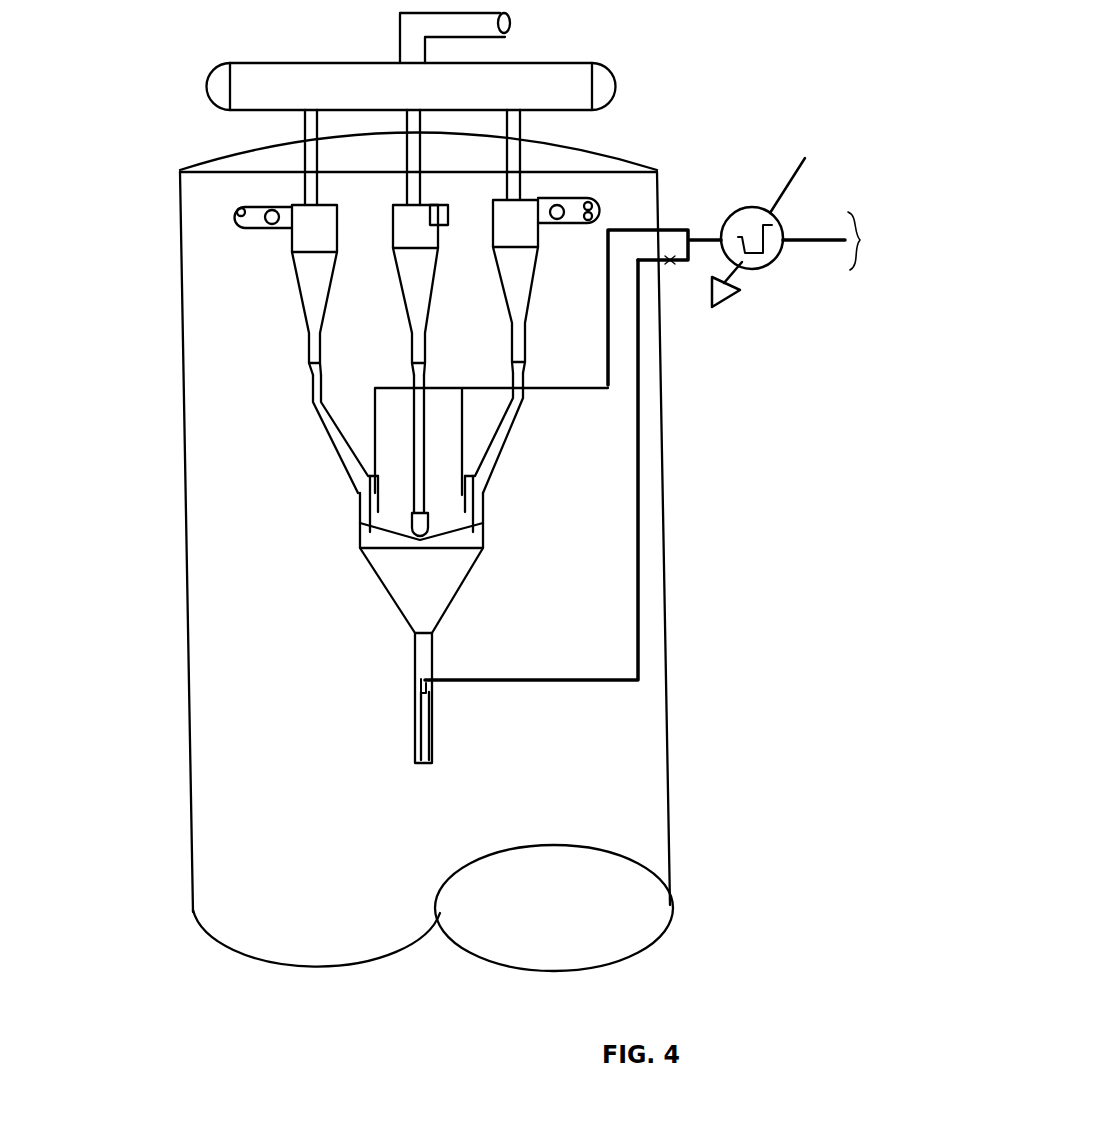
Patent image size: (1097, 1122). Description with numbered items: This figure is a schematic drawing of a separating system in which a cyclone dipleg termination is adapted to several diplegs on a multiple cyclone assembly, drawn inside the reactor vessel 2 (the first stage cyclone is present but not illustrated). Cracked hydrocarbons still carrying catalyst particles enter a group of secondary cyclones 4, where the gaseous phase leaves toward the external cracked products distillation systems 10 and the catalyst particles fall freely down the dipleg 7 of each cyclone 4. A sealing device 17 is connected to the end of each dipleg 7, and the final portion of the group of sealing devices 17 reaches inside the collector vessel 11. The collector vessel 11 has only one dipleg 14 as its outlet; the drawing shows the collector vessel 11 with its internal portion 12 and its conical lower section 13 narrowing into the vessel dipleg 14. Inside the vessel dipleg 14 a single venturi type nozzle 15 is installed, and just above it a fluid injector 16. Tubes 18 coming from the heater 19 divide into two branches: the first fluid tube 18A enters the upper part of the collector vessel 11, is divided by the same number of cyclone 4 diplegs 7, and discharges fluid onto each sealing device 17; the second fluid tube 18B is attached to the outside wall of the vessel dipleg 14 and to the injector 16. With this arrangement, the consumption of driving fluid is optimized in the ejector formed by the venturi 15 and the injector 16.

The reactor vessel 2 is at (183, 347).
The second cyclone 4 is at (515, 288).
The dipleg 7 is at (487, 452).
The external cracked products distillation systems 10 is at (482, 25).
The collector vessel 11 is at (358, 530).
The distributor baffle 12 is at (385, 542).
The conical hopper section 13 is at (427, 583).
The vessel dipleg 14 is at (423, 660).
The venturi type nozzle 15 is at (433, 728).
The fluid injector 16 is at (423, 687).
The sealing device 17 is at (428, 540).
The tubes 18 is at (700, 235).
The first fluid tube 18A is at (672, 230).
The second fluid tube 18B is at (642, 440).
The heater 19 is at (768, 266).